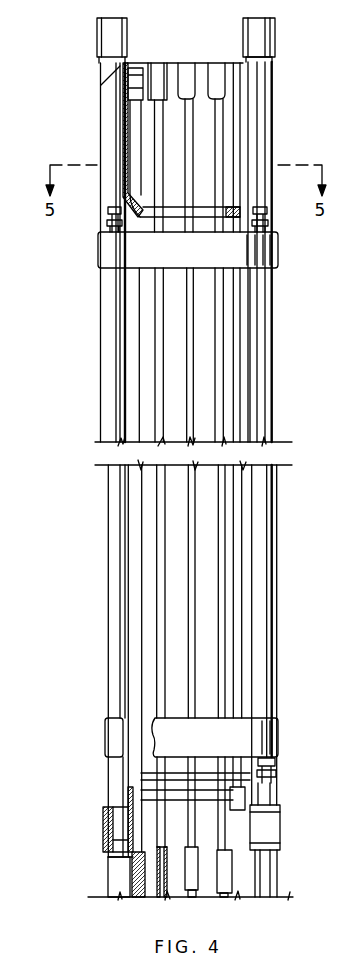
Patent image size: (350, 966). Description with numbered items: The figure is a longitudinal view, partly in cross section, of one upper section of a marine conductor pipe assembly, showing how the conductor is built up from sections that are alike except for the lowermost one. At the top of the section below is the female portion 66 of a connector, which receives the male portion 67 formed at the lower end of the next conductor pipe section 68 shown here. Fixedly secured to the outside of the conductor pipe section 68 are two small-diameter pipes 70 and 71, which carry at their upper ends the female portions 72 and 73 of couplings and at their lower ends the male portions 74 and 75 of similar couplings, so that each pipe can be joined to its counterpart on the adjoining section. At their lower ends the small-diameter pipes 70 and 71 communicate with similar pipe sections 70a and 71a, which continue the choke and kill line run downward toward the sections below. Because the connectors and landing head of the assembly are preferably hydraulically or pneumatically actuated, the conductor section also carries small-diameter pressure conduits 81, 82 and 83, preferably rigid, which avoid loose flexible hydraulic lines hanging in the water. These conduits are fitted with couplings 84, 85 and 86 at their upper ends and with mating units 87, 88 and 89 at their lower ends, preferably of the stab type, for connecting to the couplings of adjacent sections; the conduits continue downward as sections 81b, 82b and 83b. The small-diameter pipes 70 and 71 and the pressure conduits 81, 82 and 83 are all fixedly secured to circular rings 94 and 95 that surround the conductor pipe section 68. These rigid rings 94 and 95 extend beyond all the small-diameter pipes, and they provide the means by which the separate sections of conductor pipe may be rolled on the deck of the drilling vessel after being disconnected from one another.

The female portion 66 is at (245, 883).
The male portion 67 is at (237, 803).
The conductor pipe section 68 is at (232, 510).
The small-diameter pipe 70 is at (112, 332).
The small-diameter pipe section 70a is at (118, 885).
The small-diameter pipe 71 is at (265, 358).
The small-diameter pipe section 71a is at (273, 882).
The female portion of coupling 72 is at (97, 38).
The female portion of coupling 73 is at (265, 45).
The male portion of coupling 74 is at (112, 807).
The male portion of coupling 75 is at (272, 805).
The pressure conduit 81 is at (162, 538).
The pressure conduit section 81b is at (158, 897).
The pressure conduit 82 is at (190, 565).
The pressure conduit section 82b is at (195, 897).
The pressure conduit 83 is at (222, 600).
The pressure conduit section 83b is at (225, 895).
The coupling 84 is at (151, 67).
The coupling 85 is at (183, 72).
The coupling 86 is at (213, 72).
The mating unit 87 is at (172, 847).
The mating unit 88 is at (185, 850).
The mating unit 89 is at (222, 853).
The circular ring 94 is at (178, 260).
The circular ring 95 is at (215, 746).